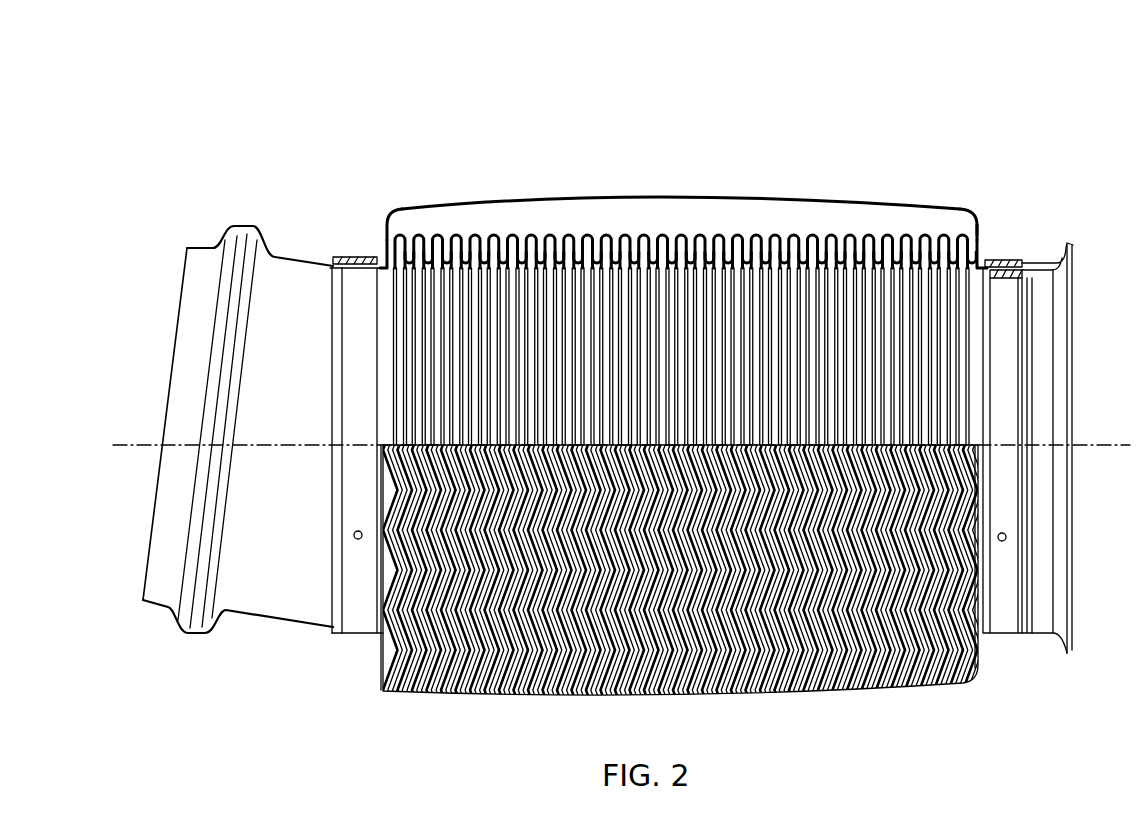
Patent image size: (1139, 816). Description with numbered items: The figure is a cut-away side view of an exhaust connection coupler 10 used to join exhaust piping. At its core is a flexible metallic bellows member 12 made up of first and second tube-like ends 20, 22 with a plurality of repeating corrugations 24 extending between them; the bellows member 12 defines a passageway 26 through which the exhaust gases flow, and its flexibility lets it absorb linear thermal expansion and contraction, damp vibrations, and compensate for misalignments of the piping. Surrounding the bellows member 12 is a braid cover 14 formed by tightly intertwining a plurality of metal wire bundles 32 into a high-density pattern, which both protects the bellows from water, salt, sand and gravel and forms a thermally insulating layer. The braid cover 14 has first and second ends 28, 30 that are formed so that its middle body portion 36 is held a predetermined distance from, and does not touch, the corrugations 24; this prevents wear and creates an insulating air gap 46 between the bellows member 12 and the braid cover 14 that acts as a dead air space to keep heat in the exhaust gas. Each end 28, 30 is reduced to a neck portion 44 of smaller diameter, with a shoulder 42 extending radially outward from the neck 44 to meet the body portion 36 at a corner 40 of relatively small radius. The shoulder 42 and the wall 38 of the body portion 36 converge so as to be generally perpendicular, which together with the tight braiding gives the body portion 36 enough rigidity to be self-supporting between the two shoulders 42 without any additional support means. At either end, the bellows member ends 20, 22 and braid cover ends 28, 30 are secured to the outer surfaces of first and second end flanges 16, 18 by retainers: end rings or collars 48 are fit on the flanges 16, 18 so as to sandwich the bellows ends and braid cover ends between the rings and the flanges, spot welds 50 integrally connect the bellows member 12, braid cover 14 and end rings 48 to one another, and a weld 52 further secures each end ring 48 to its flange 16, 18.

The coupler 10 is at (707, 111).
The bellows member 12 is at (524, 229).
The braid cover 14 is at (722, 186).
The first end flange 16 is at (1060, 666).
The second end flange 18 is at (190, 651).
The first tube-like end 20 is at (1016, 286).
The second tube-like end 22 is at (360, 281).
The corrugations 24 is at (586, 231).
The passageway 26 is at (1004, 425).
The first end of braid cover 28 is at (995, 210).
The second end of braid cover 30 is at (367, 206).
The metal wire bundles 32 is at (662, 692).
The middle body portion 36 is at (790, 197).
The body portion wall 38 is at (873, 205).
The corner 40 is at (389, 211).
The shoulder 42 is at (383, 238).
The neck portion 44 is at (340, 258).
The air gap 46 is at (697, 228).
The end ring 48 is at (360, 636).
The spot weld 50 is at (354, 536).
The weld 52 is at (334, 636).